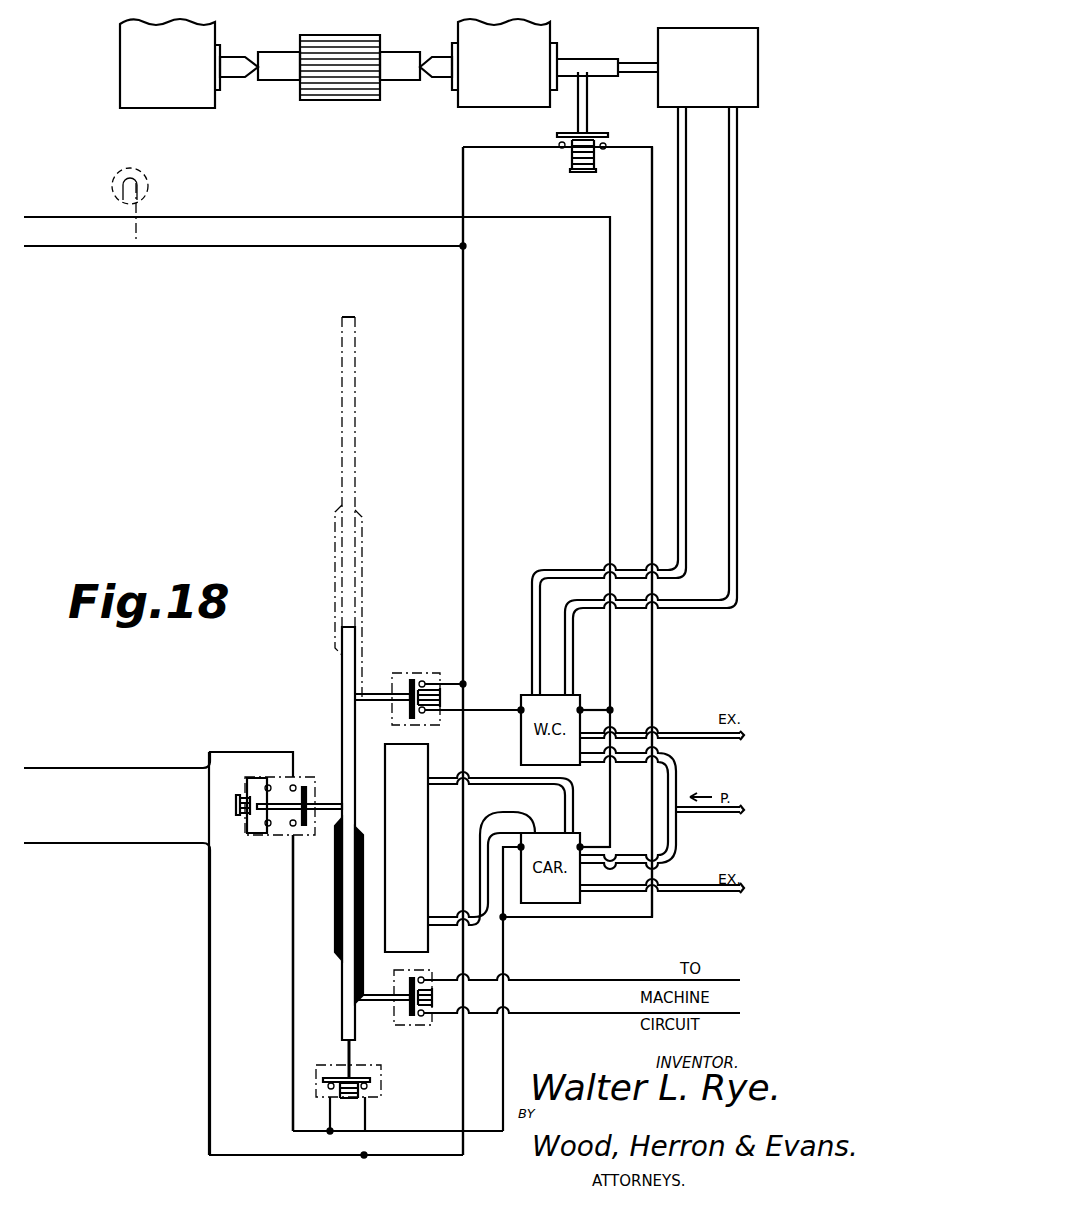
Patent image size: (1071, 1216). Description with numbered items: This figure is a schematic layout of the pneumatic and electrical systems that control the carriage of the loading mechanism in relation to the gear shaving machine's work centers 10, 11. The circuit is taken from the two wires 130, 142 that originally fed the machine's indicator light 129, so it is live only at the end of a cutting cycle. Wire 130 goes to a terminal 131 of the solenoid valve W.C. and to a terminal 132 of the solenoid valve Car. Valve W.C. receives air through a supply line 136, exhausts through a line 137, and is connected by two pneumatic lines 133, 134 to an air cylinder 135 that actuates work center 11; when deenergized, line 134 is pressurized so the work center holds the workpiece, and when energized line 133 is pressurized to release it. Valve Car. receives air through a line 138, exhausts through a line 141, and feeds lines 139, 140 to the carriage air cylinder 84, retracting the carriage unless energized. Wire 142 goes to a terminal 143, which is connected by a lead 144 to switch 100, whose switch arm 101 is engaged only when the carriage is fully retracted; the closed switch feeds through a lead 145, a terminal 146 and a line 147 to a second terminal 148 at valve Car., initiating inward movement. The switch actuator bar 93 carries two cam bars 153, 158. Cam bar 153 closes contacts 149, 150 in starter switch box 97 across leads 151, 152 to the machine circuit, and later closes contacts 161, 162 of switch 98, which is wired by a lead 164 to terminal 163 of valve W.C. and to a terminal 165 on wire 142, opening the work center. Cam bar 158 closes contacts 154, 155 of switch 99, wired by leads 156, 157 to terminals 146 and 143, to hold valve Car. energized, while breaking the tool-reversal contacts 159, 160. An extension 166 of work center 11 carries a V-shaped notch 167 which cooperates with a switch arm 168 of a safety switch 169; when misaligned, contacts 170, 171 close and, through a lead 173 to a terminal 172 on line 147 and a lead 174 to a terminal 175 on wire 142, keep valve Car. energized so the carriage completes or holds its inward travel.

The work center 10 is at (232, 60).
The work center 11 is at (441, 62).
The air cylinder 84 is at (406, 848).
The switch actuator bar 93 is at (355, 396).
The switch box 97 is at (410, 1025).
The switch box 98 is at (400, 673).
The switch box 99 is at (305, 776).
The switch box 100 is at (381, 1088).
The switch arm 101 is at (348, 1052).
The indicator light 129 is at (148, 170).
The wire 130 is at (296, 217).
The terminal 131 is at (582, 708).
The terminal 132 is at (582, 845).
The pneumatic line 133 is at (688, 270).
The pneumatic line 134 is at (740, 324).
The air cylinder 135 is at (746, 96).
The air supply line 136 is at (680, 782).
The exhaust line 137 is at (668, 733).
The air supply line 138 is at (618, 858).
The air line 139 is at (518, 790).
The air line 140 is at (444, 916).
The exhaust line 141 is at (690, 893).
The wire 142 is at (262, 250).
The terminal 143 is at (366, 1156).
The lead 144 is at (366, 1114).
The lead 145 is at (292, 1100).
The terminal 146 is at (330, 1132).
The line 147 is at (504, 1040).
The terminal 148 is at (520, 846).
The contact 149 is at (422, 980).
The contact 150 is at (422, 1016).
The lead 151 is at (584, 980).
The lead 152 is at (598, 1013).
The cam bar 153 is at (365, 578).
The contact 154 is at (294, 828).
The contact 155 is at (286, 778).
The lead 156 is at (292, 964).
The lead 157 is at (209, 990).
The cam bar 158 is at (335, 556).
The contact 159 is at (247, 784).
The contact 160 is at (270, 830).
The contact 161 is at (424, 682).
The contact 162 is at (424, 714).
The terminal 163 is at (521, 710).
The lead 164 is at (480, 684).
The terminal 165 is at (464, 684).
The extension 166 is at (570, 60).
The V-shaped notch 167 is at (598, 70).
The switch arm 168 is at (588, 96).
The safety switch 169 is at (575, 113).
The contact 170 is at (558, 149).
The contact 171 is at (606, 150).
The terminal 172 is at (504, 918).
The lead 173 is at (652, 436).
The lead 174 is at (463, 178).
The terminal 175 is at (466, 250).